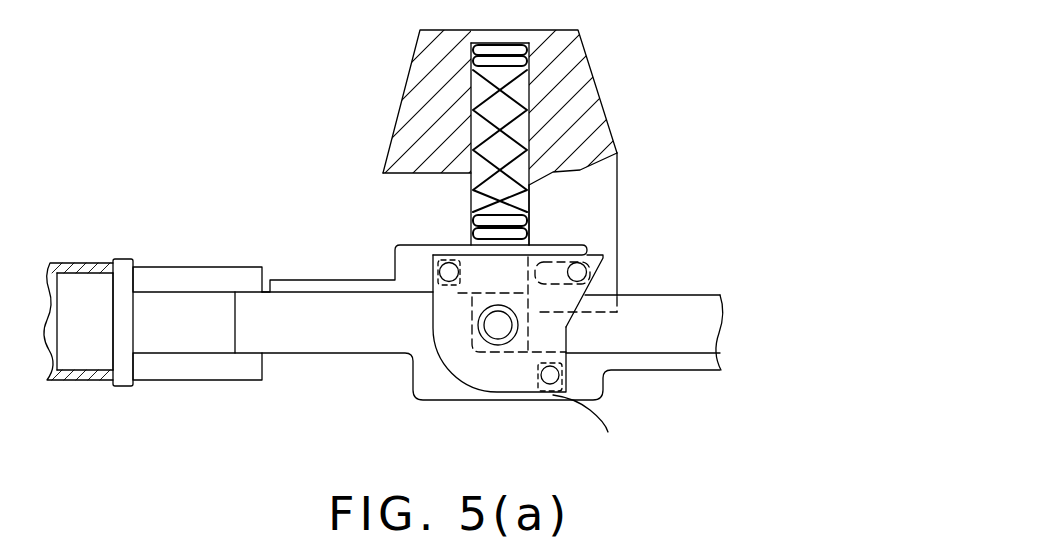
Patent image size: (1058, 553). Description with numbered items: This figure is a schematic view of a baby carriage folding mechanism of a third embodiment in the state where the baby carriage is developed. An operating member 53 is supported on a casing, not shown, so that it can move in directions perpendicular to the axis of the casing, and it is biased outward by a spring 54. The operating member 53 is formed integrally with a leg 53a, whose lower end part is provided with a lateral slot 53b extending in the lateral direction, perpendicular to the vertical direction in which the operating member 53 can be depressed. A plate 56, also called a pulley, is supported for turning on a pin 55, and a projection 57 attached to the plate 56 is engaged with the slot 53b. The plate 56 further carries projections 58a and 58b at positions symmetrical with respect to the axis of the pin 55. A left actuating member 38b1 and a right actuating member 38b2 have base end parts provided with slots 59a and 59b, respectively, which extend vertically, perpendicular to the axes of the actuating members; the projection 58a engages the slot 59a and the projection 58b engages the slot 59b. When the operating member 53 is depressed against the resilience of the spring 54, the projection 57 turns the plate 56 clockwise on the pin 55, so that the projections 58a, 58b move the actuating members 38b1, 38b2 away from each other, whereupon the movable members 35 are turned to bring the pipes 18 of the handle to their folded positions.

The pipe 18 is at (78, 263).
The movable member 35 is at (200, 267).
The left actuating member 38b1 is at (306, 354).
The right actuating member 38b2 is at (703, 295).
The operating member 53 is at (598, 106).
The leg 53a is at (595, 197).
The lateral slot 53b is at (600, 268).
The spring 54 is at (469, 191).
The pin 55 is at (497, 339).
The plate 56 is at (448, 353).
The projection 57 is at (593, 253).
The projection 58a is at (536, 393).
The projection 58b is at (447, 266).
The slot 59a is at (608, 424).
The slot 59b is at (449, 262).